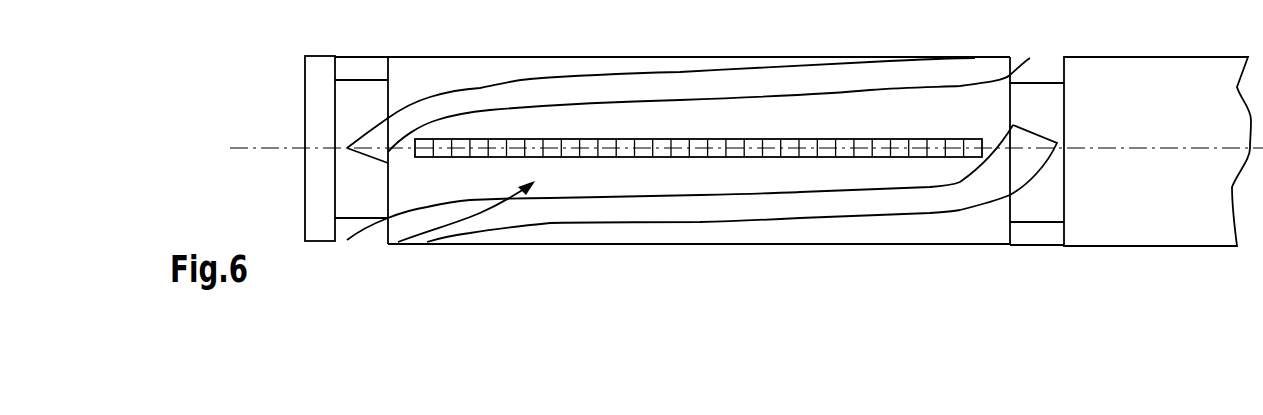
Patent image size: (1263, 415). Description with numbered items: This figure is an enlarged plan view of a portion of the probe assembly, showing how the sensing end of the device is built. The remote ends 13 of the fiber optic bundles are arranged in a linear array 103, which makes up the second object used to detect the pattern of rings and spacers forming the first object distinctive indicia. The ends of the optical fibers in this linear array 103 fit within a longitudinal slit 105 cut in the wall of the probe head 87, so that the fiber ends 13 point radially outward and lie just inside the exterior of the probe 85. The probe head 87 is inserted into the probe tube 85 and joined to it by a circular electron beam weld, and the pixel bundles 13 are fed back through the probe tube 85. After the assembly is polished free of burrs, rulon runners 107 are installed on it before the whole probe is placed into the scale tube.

The remote ends of the fiber optic bundles 13 is at (601, 150).
The probe tube 85 is at (1152, 195).
The probe head 87 is at (360, 177).
The linear array 103 is at (830, 155).
The longitudinal slit 105 is at (821, 140).
The rulon runners 107 is at (527, 78).